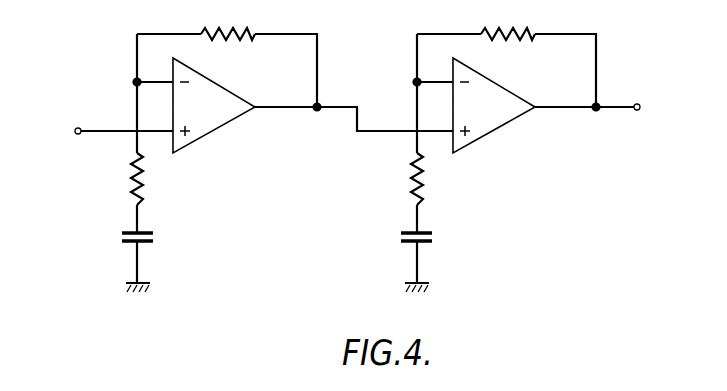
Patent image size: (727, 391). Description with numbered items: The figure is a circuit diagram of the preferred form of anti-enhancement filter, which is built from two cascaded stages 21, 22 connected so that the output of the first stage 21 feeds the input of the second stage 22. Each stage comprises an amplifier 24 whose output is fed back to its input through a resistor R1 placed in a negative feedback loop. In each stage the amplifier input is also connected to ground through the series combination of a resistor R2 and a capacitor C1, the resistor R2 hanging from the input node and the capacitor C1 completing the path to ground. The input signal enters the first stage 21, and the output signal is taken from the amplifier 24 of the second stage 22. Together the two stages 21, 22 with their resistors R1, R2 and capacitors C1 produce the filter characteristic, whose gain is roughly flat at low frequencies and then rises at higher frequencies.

The first cascaded stage 21 is at (133, 43).
The second cascaded stage 22 is at (414, 55).
The amplifier 24 is at (220, 117).
The resistor R1 is at (368, 20).
The resistor R2 is at (264, 179).
The capacitor C1 is at (288, 248).